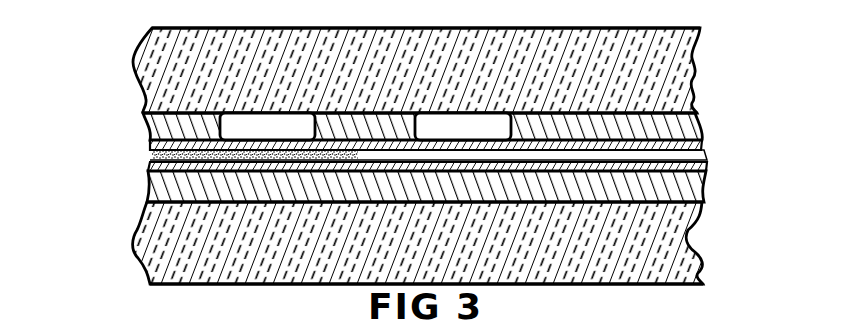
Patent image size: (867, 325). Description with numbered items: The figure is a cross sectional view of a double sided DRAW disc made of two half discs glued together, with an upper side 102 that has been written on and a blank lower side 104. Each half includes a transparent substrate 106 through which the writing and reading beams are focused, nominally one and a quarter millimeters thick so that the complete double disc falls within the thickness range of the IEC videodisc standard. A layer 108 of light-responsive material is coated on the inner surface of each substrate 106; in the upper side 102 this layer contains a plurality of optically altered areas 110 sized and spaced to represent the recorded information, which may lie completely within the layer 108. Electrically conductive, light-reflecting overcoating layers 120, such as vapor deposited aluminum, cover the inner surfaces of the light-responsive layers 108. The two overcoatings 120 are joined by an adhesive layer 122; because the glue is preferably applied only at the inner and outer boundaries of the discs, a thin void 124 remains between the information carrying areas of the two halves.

The upper side 102 is at (122, 73).
The lower side 104 is at (122, 250).
The transparent substrate 106 is at (694, 57).
The light-responsive layer 108 is at (680, 126).
The optically altered areas 110 is at (365, 126).
The reflective overcoating layer 120 is at (702, 147).
The adhesive layer 122 is at (150, 157).
The void 124 is at (703, 155).